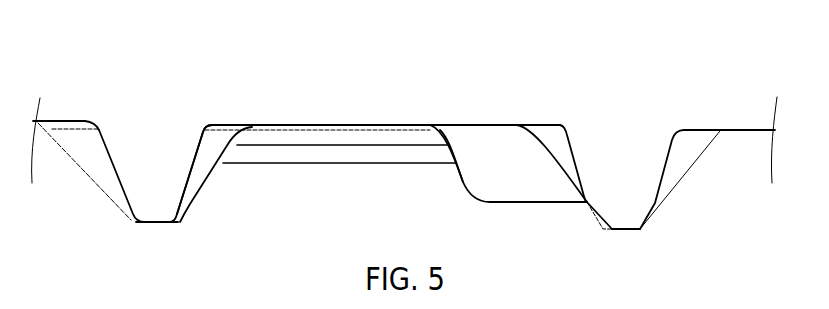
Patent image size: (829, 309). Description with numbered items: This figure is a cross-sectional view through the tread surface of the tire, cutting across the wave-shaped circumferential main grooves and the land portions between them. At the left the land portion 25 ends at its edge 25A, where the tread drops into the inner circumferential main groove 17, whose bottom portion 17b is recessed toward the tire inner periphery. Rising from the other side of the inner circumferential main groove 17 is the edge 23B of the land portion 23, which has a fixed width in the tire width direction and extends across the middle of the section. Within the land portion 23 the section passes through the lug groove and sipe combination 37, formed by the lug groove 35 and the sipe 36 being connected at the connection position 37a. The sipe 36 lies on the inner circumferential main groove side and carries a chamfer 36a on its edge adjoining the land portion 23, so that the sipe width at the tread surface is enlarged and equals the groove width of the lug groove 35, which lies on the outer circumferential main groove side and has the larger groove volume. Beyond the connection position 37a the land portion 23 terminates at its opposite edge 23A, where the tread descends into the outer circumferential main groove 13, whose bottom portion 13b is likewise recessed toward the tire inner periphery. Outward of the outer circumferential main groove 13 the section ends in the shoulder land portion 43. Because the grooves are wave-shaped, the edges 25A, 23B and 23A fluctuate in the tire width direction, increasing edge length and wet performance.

The land portion 25 is at (50, 118).
The edge of land portion 25A is at (85, 122).
The inner circumferential main groove 17 is at (122, 147).
The bottom portion of inner circumferential main groove 17b is at (157, 180).
The edge of land portion 23B is at (210, 127).
The chamfer 36a is at (255, 138).
The sipe 36 is at (302, 137).
The land portion 23 is at (350, 123).
The lug groove and sipe combination 37 is at (388, 123).
The connection position 37a is at (453, 148).
The lug groove 35 is at (505, 167).
The edge of land portion 23A is at (568, 127).
The bottom portion of outer circumferential main groove 13b is at (615, 187).
The outer circumferential main groove 13 is at (643, 127).
The shoulder land portion 43 is at (708, 130).